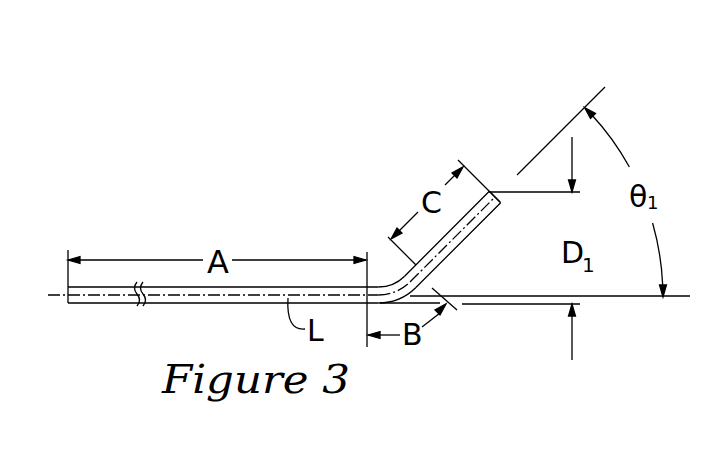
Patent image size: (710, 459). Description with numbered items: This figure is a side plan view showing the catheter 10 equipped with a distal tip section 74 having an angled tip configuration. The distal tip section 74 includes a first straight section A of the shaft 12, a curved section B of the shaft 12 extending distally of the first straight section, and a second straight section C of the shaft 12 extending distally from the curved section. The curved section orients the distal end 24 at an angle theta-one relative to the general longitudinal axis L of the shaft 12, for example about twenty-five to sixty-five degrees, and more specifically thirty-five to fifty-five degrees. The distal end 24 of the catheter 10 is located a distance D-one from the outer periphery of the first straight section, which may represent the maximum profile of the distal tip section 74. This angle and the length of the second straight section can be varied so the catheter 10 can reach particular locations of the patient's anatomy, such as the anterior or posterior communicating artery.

The catheter 10 is at (284, 211).
The shaft 12 is at (216, 305).
The distal tip section 74 is at (296, 212).
The distal end 24 is at (497, 188).